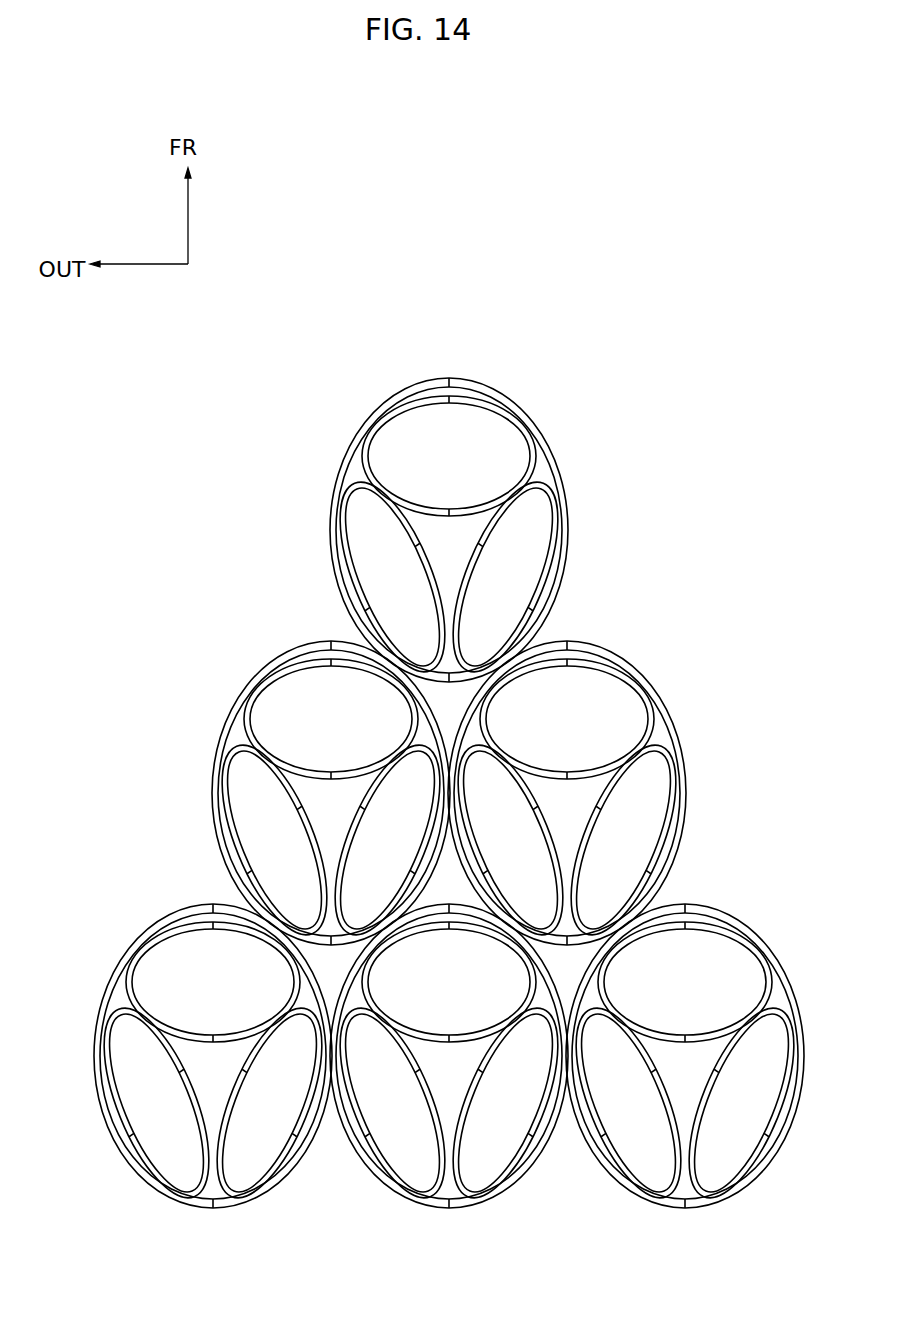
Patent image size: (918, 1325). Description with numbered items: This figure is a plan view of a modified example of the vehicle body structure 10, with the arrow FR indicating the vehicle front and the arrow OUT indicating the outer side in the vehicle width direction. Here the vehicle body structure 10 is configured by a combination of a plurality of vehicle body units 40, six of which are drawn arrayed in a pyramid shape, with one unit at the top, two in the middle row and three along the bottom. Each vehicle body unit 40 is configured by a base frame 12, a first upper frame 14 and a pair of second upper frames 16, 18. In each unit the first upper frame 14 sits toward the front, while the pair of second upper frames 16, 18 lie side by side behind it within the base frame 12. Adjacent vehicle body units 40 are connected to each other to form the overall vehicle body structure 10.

The vehicle body structure 10 is at (449, 742).
The base frame 12 is at (449, 826).
The first upper frame 14 is at (449, 719).
The second upper frame 16 is at (506, 840).
The second upper frame 18 is at (393, 840).
The vehicle body unit 40 is at (449, 801).